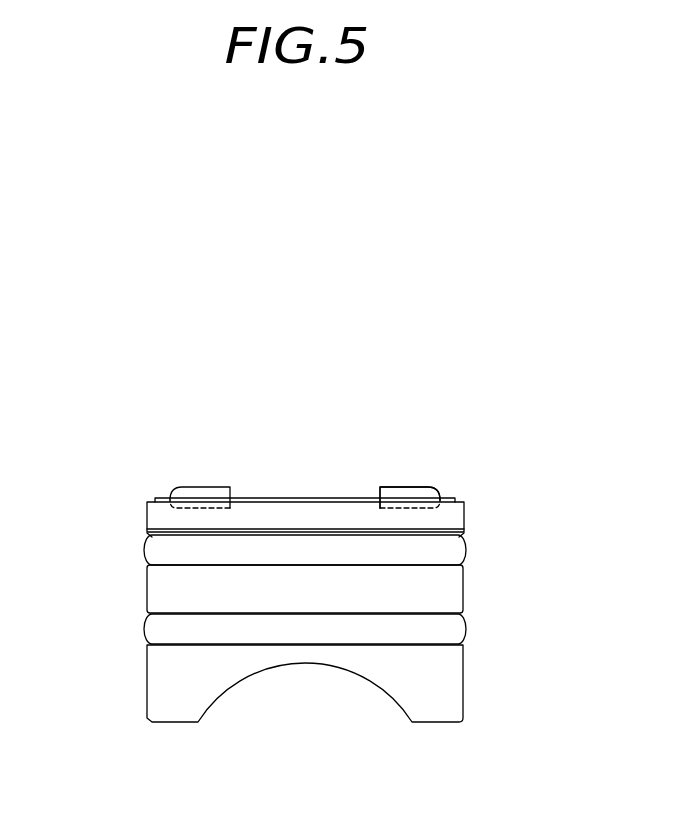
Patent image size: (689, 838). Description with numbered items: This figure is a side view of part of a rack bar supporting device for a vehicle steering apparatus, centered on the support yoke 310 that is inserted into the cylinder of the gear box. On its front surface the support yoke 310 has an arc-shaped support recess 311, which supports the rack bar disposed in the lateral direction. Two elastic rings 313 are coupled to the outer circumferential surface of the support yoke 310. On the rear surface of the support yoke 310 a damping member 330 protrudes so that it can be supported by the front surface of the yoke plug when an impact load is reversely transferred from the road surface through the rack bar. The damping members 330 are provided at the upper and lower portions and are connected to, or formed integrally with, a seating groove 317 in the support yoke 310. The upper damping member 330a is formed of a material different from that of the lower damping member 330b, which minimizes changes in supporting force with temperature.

The support yoke 310 is at (64, 351).
The support recess 311 is at (217, 703).
The elastic ring 313 is at (160, 625).
The seating groove 317 is at (415, 510).
The damping member 330 is at (410, 422).
The upper damping member 330a is at (203, 496).
The lower damping member 330b is at (410, 496).